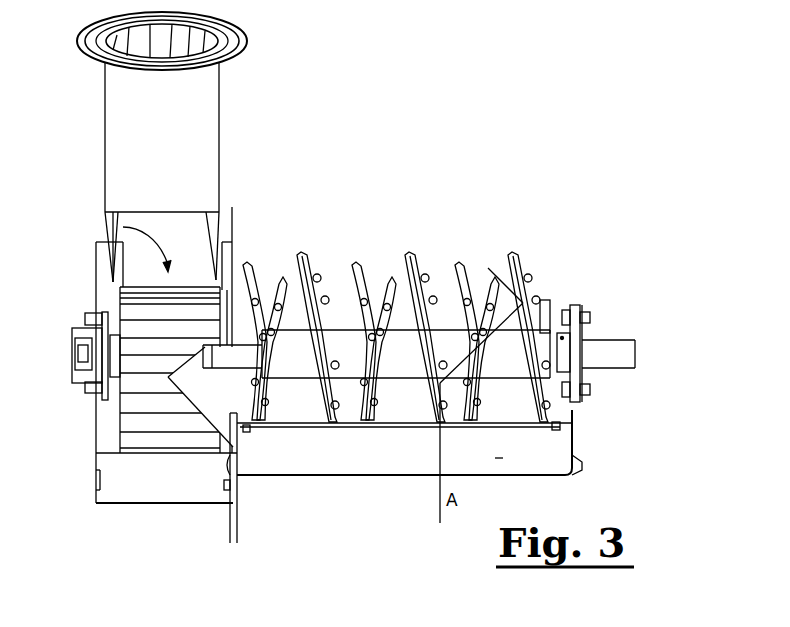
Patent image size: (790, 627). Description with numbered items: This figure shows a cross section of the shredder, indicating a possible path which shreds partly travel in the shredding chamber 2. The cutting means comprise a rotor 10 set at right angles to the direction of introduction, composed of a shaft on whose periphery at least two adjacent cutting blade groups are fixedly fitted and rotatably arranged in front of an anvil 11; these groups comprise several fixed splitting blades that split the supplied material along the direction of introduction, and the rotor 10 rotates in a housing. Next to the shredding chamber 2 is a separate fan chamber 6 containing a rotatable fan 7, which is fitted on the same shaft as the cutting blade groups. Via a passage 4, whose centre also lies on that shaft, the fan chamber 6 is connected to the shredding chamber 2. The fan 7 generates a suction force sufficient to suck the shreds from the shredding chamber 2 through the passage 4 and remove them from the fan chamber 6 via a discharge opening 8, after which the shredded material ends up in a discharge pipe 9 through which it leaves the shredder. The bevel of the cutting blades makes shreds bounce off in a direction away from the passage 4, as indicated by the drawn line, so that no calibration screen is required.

The shredding chamber 2 is at (410, 393).
The passage 4 is at (241, 330).
The fan chamber 6 is at (208, 388).
The fan 7 is at (157, 437).
The discharge opening 8 is at (108, 227).
The discharge pipe 9 is at (198, 133).
The rotor 10 is at (627, 352).
The anvil 11 is at (517, 435).